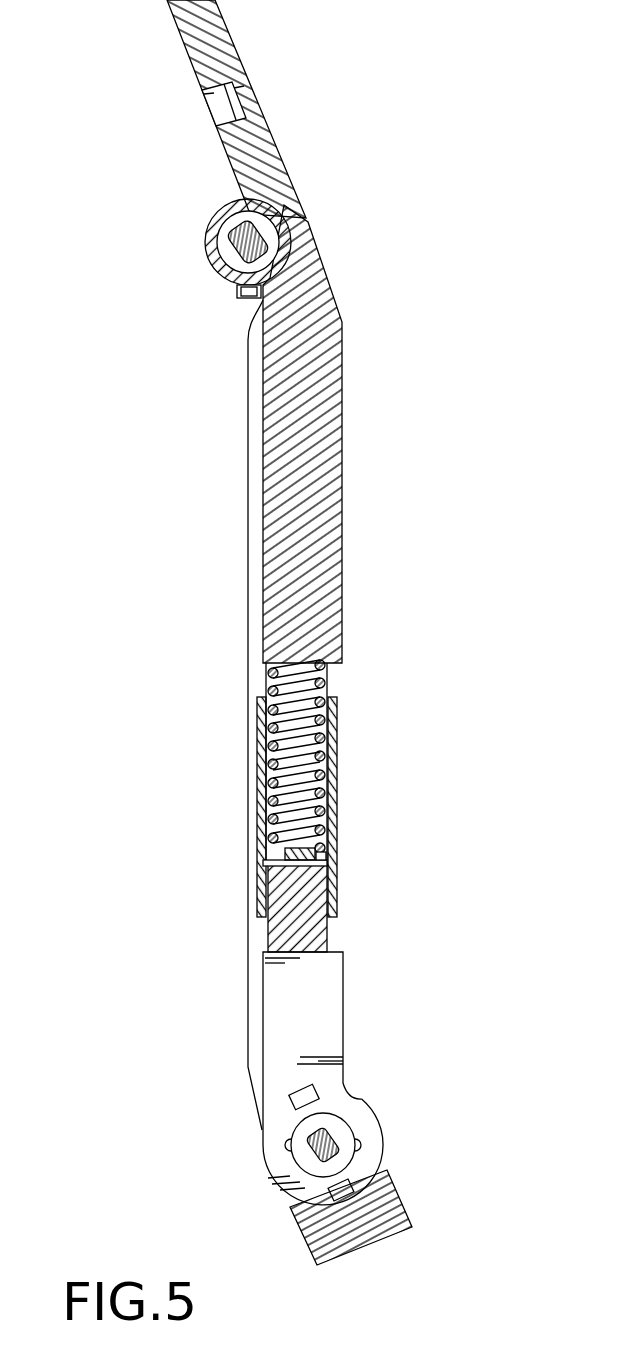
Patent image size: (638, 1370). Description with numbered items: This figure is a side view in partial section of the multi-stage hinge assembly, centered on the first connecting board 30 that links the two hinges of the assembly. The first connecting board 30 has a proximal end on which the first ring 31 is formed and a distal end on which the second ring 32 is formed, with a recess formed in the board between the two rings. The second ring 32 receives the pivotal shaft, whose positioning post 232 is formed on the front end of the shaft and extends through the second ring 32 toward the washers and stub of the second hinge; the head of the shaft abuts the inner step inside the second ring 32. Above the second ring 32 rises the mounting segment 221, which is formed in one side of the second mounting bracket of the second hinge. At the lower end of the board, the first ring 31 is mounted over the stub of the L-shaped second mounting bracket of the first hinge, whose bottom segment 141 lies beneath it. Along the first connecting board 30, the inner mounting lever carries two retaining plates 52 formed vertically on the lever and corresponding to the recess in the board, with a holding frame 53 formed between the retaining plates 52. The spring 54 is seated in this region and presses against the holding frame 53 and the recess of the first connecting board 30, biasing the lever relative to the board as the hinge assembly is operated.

The mounting segment 221 is at (212, 35).
The second ring 32 is at (212, 228).
The positioning post 232 is at (235, 252).
The first connecting board 30 is at (318, 500).
The spring 54 is at (325, 737).
The retaining plates 52 is at (333, 780).
The holding frame 53 is at (316, 860).
The first ring 31 is at (363, 1127).
The bottom segment 141 is at (380, 1213).